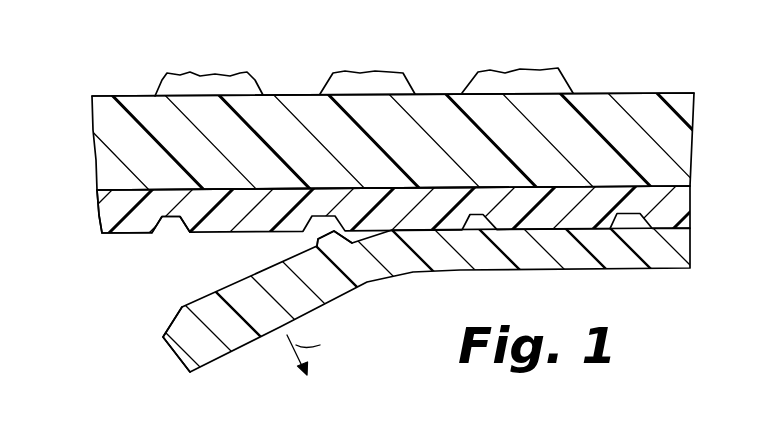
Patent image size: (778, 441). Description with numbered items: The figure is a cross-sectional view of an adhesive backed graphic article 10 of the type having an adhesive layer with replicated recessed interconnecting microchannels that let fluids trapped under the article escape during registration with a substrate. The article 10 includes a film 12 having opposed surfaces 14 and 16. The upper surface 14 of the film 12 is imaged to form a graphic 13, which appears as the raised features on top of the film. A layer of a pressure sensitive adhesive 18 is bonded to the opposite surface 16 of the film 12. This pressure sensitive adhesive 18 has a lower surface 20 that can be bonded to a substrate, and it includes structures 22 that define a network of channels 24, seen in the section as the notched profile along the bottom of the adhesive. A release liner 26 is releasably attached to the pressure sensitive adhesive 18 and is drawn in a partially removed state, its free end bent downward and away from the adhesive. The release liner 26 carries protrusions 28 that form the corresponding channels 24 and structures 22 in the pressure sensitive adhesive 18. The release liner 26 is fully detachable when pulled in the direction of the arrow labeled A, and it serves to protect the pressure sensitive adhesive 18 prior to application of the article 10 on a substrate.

The article 10 is at (104, 70).
The film 12 is at (688, 127).
The graphic 13 is at (498, 80).
The surface 14 is at (676, 91).
The surface 16 is at (684, 192).
The pressure sensitive adhesive 18 is at (682, 210).
The surface 20 is at (105, 233).
The structures 22 is at (217, 232).
The channels 24 is at (161, 232).
The release liner 26 is at (183, 347).
The protrusions 28 is at (320, 242).